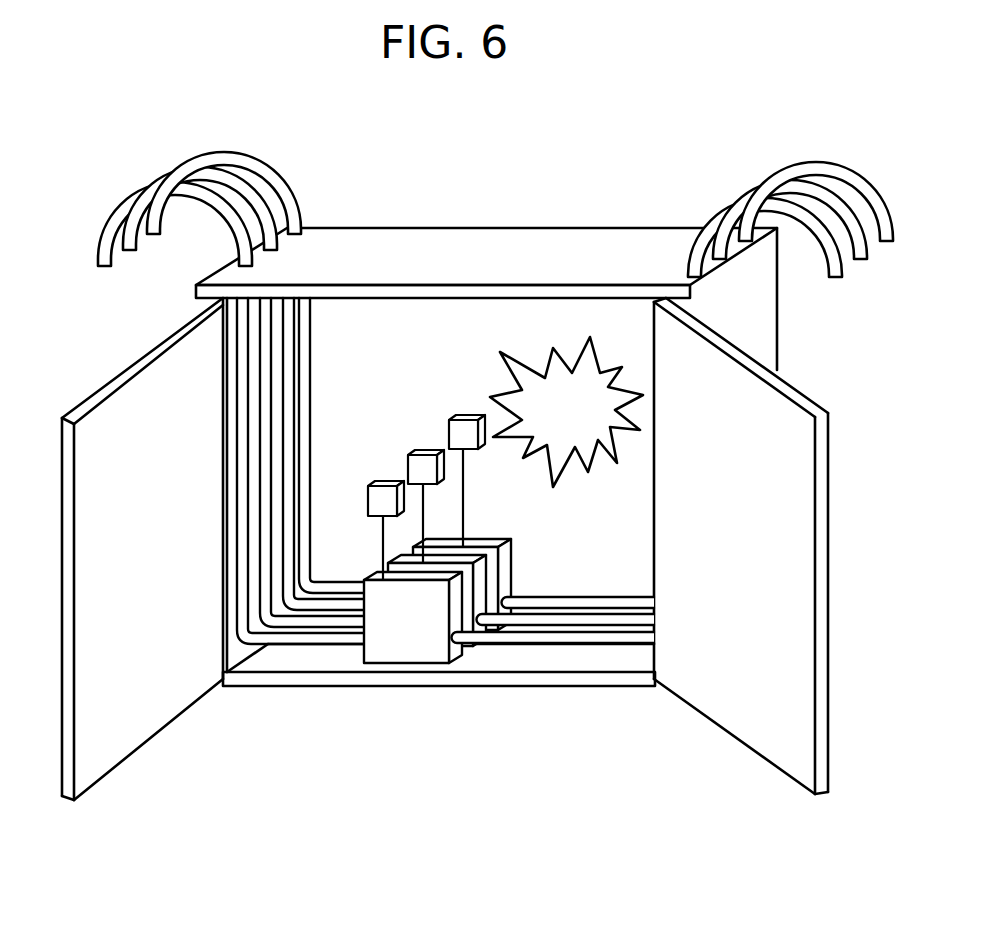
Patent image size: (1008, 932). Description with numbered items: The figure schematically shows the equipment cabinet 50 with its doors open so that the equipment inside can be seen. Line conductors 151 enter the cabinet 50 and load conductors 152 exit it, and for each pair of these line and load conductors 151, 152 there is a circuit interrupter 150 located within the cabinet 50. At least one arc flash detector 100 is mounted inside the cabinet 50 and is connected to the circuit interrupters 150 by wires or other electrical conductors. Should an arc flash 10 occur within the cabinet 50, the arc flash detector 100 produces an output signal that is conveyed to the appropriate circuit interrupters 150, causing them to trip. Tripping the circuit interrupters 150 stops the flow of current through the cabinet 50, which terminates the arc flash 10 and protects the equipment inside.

The arc flash 10 is at (517, 358).
The equipment cabinet 50 is at (747, 326).
The arc flash detector 100 is at (452, 422).
The circuit interrupter 150 is at (458, 600).
The line conductors 151 is at (197, 162).
The load conductors 152 is at (795, 168).